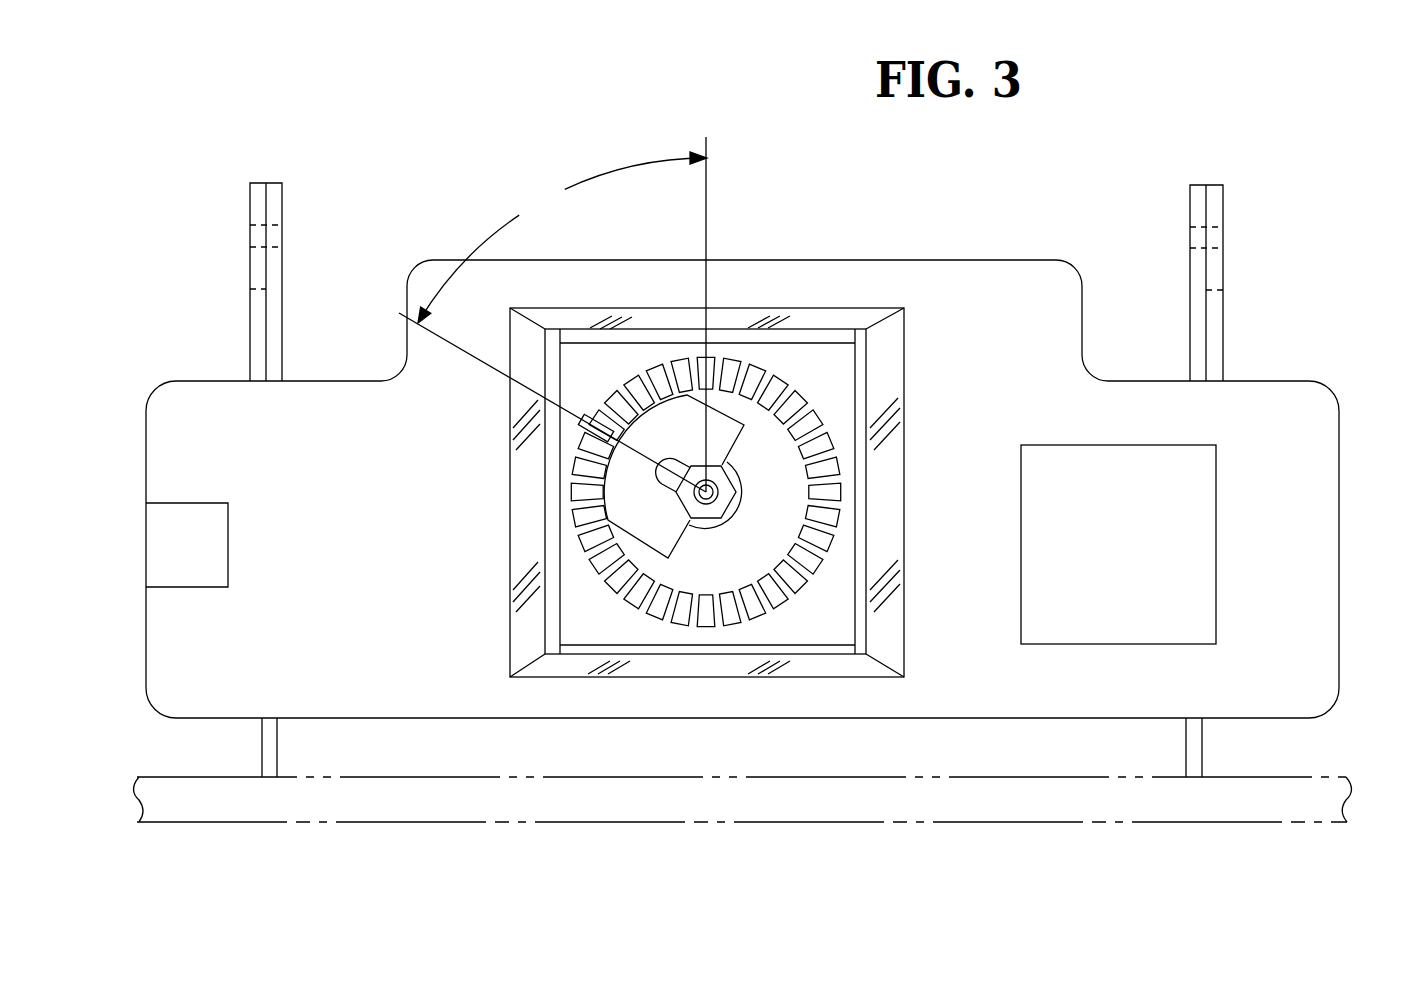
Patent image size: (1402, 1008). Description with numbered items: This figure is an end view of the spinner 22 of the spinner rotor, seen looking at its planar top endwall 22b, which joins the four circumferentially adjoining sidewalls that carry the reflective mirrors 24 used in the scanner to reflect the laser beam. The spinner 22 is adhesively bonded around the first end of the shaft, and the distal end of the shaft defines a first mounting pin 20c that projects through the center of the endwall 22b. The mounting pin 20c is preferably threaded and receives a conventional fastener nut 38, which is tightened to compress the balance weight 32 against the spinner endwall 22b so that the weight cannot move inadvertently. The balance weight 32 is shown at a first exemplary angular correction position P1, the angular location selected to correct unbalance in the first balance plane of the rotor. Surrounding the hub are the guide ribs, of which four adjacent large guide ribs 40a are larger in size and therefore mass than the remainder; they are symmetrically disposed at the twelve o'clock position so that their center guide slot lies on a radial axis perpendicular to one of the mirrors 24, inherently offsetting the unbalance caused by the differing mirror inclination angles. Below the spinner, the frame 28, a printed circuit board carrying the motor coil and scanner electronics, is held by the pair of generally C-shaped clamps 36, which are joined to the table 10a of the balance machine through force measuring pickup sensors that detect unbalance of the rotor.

The table 10a is at (617, 822).
The first mounting pin 20c is at (717, 498).
The spinner 22 is at (492, 594).
The top endwall 22b is at (825, 613).
The reflective mirrors 24 is at (523, 511).
The frame 28 is at (950, 259).
The balance weight 32 is at (693, 551).
The C-shaped clamps 36 is at (250, 203).
The fastener nut 38 is at (720, 482).
The large guide ribs 40a is at (808, 422).
The first angular correction position P1 is at (553, 314).